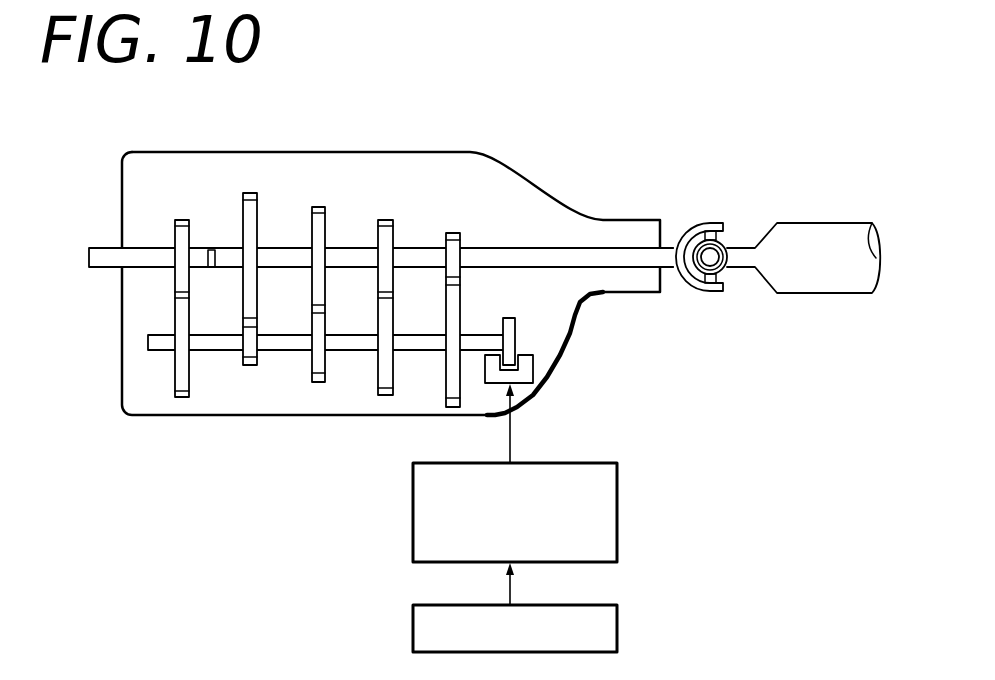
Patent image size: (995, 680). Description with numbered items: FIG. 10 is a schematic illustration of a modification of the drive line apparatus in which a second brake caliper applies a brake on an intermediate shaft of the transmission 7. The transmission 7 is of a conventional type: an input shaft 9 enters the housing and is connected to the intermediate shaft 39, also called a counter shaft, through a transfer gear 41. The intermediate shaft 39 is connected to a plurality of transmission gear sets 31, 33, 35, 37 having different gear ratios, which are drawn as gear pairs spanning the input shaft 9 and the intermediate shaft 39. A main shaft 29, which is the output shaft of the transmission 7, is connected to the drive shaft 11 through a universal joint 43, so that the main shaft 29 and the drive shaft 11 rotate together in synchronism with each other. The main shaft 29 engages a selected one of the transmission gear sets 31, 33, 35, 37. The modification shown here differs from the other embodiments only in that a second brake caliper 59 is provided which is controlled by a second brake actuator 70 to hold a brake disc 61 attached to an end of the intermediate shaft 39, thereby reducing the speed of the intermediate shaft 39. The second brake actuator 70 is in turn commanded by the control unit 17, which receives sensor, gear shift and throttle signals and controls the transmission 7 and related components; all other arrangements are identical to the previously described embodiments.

The transmission 7 is at (500, 143).
The input shaft 9 is at (142, 250).
The drive shaft 11 is at (818, 229).
The control unit 17 is at (618, 614).
The main shaft 29 is at (610, 252).
The transmission gear set 31 is at (250, 192).
The transmission gear set 33 is at (319, 206).
The transmission gear set 35 is at (388, 219).
The transmission gear set 37 is at (455, 232).
The intermediate shaft 39 is at (217, 351).
The transfer gear 41 is at (182, 219).
The universal joint 43 is at (700, 222).
The second brake caliper 59 is at (534, 365).
The brake disc 61 is at (517, 327).
The second brake actuator 70 is at (618, 472).